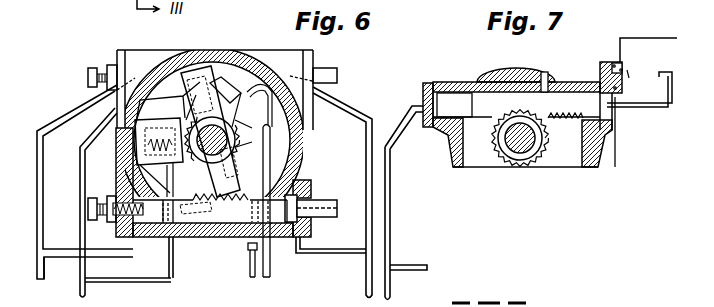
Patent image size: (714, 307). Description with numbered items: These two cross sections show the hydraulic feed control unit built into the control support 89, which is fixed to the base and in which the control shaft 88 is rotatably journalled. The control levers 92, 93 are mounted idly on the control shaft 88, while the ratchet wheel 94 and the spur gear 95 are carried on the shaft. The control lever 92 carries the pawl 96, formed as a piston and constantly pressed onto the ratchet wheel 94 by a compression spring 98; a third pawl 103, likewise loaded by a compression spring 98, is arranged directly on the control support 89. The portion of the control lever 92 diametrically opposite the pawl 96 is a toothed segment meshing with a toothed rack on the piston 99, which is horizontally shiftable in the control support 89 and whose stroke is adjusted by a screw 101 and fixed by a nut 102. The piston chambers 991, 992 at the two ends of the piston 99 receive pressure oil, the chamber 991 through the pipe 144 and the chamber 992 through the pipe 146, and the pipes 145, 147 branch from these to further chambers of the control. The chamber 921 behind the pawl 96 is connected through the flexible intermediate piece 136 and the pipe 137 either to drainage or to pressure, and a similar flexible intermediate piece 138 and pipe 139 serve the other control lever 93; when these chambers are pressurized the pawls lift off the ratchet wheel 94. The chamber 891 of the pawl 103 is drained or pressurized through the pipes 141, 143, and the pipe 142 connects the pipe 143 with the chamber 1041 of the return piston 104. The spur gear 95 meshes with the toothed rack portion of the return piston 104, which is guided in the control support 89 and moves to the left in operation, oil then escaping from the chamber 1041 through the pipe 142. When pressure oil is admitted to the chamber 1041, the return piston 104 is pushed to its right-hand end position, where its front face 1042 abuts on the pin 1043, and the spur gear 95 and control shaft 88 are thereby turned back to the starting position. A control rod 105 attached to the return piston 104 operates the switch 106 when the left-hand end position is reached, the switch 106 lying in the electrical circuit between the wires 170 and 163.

In FIG. 6, the control shaft 88 is at (206, 162).
In FIG. 7, the control shaft 88 is at (517, 150).
In FIG. 6, the control support 89 is at (262, 52).
In FIG. 7, the control support 89 is at (526, 75).
In FIG. 6, the control lever 92 is at (242, 150).
In FIG. 6, the control lever 93 is at (257, 105).
In FIG. 6, the ratchet wheel 94 is at (246, 138).
In FIG. 7, the spur gear 95 is at (540, 160).
In FIG. 6, the pawl 96 is at (209, 70).
In FIG. 6, the compression spring 98 is at (117, 140).
In FIG. 6, the piston 99 is at (210, 237).
In FIG. 6, the screw 101 is at (87, 78).
In FIG. 6, the nut 102 is at (110, 64).
In FIG. 6, the third pawl 103 is at (167, 139).
In FIG. 7, the return piston 104 is at (481, 97).
In FIG. 7, the control rod 105 is at (667, 84).
In FIG. 7, the switch 106 is at (623, 66).
In FIG. 6, the flexible intermediate piece 136 is at (290, 74).
In FIG. 6, the pipe 137 is at (271, 254).
In FIG. 6, the flexible intermediate piece 138 is at (247, 246).
In FIG. 6, the pipe 139 is at (249, 266).
In FIG. 6, the pipe 141 is at (115, 283).
In FIG. 7, the pipe 141 is at (410, 266).
In FIG. 6, the pipe 142 is at (80, 175).
In FIG. 7, the pipe 142 is at (390, 228).
In FIG. 7, the pipe 143 is at (390, 281).
In FIG. 6, the pipe 144 is at (352, 255).
In FIG. 6, the pipe 145 is at (356, 97).
In FIG. 6, the pipe 146 is at (60, 258).
In FIG. 6, the pipe 147 is at (40, 128).
In FIG. 7, the wire 163 is at (646, 38).
In FIG. 7, the wire 170 is at (622, 135).
In FIG. 6, the chamber 891 is at (181, 108).
In FIG. 6, the chamber 921 is at (158, 66).
In FIG. 6, the piston chamber 991 is at (303, 180).
In FIG. 6, the piston chamber 992 is at (145, 238).
In FIG. 7, the chamber 1041 is at (440, 118).
In FIG. 7, the front face 1042 is at (522, 112).
In FIG. 7, the pin 1043 is at (547, 80).